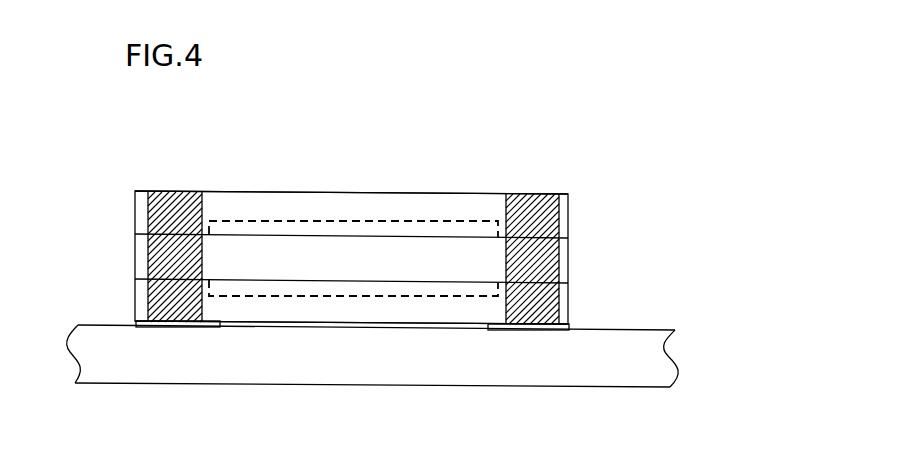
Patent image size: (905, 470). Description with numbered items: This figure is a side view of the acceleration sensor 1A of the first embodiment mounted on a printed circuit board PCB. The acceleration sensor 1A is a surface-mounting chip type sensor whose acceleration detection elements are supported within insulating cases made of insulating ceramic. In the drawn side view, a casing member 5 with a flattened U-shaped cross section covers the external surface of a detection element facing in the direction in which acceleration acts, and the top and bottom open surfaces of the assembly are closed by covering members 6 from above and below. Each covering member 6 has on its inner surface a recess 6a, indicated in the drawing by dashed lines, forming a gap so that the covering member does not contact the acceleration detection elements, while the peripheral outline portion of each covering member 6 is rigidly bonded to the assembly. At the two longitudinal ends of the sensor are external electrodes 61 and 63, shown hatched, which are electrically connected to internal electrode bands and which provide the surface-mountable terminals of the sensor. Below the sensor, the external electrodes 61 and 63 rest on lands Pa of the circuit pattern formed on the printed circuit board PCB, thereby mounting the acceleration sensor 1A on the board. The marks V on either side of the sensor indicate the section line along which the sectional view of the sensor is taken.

The acceleration sensor 1A is at (471, 176).
The casing member 5 is at (268, 258).
The covering member 6 is at (420, 200).
The recess 6a is at (366, 220).
The external electrode 61 is at (533, 195).
The external electrode 63 is at (175, 196).
The land pad Pa is at (167, 326).
The printed circuit board PCB is at (612, 338).
The section line V is at (122, 233).